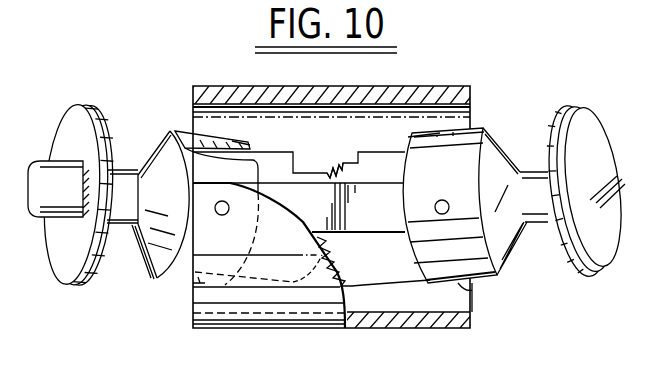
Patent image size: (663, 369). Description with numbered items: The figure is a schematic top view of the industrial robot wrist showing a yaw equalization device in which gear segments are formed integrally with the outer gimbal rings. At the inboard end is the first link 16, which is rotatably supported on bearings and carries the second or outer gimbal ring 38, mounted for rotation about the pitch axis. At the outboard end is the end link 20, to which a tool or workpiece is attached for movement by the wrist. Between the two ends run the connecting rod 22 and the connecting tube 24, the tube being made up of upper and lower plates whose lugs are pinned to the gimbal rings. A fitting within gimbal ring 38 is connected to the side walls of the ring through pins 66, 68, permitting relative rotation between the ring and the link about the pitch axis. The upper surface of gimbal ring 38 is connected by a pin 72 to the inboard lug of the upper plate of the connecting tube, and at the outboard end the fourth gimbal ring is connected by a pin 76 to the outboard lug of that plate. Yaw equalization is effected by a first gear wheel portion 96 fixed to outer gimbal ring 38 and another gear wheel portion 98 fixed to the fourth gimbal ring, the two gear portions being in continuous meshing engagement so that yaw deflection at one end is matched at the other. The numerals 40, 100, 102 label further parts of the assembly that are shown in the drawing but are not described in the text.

The first link 16 is at (140, 130).
The end link 20 is at (520, 133).
The connecting rod 22 is at (388, 216).
The connecting tube 24 is at (329, 191).
The second gimbal ring 38 is at (196, 128).
The cone hub 40 is at (498, 270).
The pin 66 is at (191, 283).
The pin 68 is at (232, 141).
The pin 72 is at (222, 215).
The pin 76 is at (446, 200).
The first gear wheel portion 96 is at (302, 174).
The gear wheel portion 98 is at (395, 272).
The flange 100 is at (474, 290).
The cap 102 is at (440, 134).